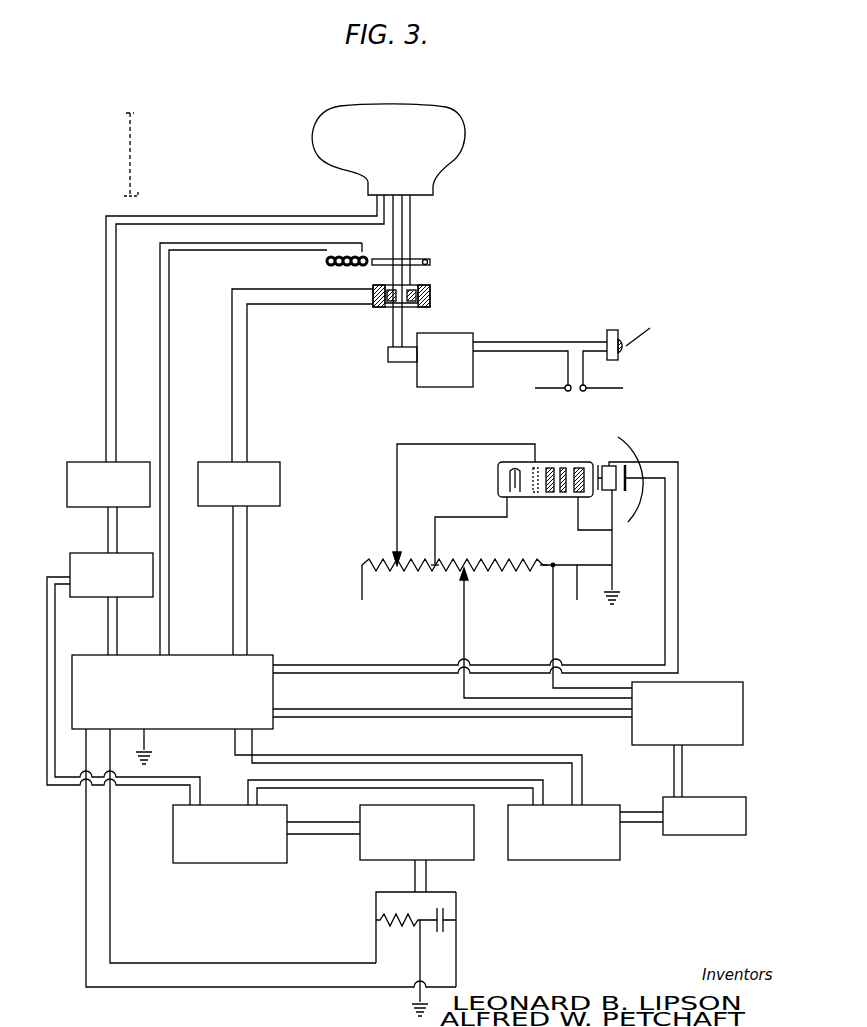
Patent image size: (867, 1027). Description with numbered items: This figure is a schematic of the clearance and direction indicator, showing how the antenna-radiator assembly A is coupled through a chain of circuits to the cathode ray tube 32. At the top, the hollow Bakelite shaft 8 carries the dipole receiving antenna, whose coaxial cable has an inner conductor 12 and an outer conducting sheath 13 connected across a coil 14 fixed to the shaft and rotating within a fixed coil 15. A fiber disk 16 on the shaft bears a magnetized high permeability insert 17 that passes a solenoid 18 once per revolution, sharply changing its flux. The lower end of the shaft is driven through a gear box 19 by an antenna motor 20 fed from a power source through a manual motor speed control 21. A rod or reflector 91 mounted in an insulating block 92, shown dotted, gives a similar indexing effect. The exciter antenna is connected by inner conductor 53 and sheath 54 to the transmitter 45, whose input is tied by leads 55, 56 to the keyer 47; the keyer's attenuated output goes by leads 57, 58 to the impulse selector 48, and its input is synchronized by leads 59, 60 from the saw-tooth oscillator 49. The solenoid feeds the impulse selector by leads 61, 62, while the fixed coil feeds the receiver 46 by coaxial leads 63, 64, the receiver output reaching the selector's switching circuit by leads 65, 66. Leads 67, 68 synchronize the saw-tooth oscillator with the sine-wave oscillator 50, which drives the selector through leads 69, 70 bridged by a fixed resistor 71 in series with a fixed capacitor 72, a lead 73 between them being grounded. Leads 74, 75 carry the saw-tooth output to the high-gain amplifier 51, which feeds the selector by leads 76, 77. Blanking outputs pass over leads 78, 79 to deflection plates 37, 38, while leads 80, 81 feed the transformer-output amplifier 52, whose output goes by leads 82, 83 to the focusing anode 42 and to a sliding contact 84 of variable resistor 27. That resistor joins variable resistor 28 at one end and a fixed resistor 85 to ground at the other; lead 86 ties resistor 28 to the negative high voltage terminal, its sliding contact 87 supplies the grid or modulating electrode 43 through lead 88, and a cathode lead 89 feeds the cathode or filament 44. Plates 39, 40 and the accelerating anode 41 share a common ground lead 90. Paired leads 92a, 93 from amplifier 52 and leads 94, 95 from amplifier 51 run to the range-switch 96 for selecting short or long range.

The antenna-radiator assembly A is at (430, 118).
The hollow Bakelite shaft 8 is at (403, 234).
The inner conductor 12 is at (412, 210).
The outer conducting sheath 13 is at (393, 230).
The coil 14 is at (416, 290).
The fixed coil 15 is at (430, 300).
The fiber disk 16 is at (428, 262).
The magnetized high permeability insert 17 is at (423, 250).
The solenoid 18 is at (328, 262).
The gear box 19 is at (392, 361).
The antenna motor 20 is at (473, 381).
The motor speed control 21 is at (617, 358).
The variable resistor 27 is at (459, 564).
The variable resistor 28 is at (487, 576).
The cathode ray tube 32 is at (630, 450).
The deflection plate 37 is at (606, 464).
The deflection plate 38 is at (636, 470).
The deflection plate 39 is at (622, 520).
The deflection plate 40 is at (593, 470).
The accelerating anode 41 is at (563, 497).
The focusing anode 42 is at (541, 468).
The grid or modulating electrode 43 is at (535, 497).
The cathode or filament 44 is at (509, 482).
The transmitter 45 is at (67, 495).
The receiver 46 is at (280, 492).
The keyer 47 is at (70, 563).
The impulse selector 48 is at (200, 655).
The saw-tooth oscillator 49 is at (248, 863).
The sine-wave oscillator 50 is at (468, 860).
The high-gain amplifier 51 is at (614, 860).
The transformer-output amplifier 52 is at (743, 732).
The inner conductor 53 is at (106, 268).
The concentric conducting sheath 54 is at (116, 290).
The lead 55 is at (108, 524).
The lead 56 is at (117, 544).
The lead 57 is at (108, 622).
The lead 58 is at (117, 645).
The lead 59 is at (47, 612).
The lead 60 is at (55, 643).
The lead 61 is at (160, 353).
The lead 62 is at (169, 388).
The coaxial lead 63 is at (232, 402).
The coaxial lead 64 is at (247, 430).
The lead 65 is at (233, 532).
The lead 66 is at (247, 568).
The lead 67 is at (316, 822).
The lead 68 is at (330, 834).
The lead 69 is at (376, 897).
The lead 70 is at (457, 950).
The fixed resistor 71 is at (404, 922).
The fixed capacitor 72 is at (445, 914).
The lead 73 is at (421, 968).
The lead 74 is at (395, 784).
The lead 75 is at (428, 790).
The lead 76 is at (465, 755).
The lead 77 is at (516, 763).
The lead 78 is at (666, 660).
The lead 79 is at (679, 642).
The lead 80 is at (372, 705).
The lead 81 is at (390, 718).
The lead 82 is at (591, 625).
The lead 83 is at (466, 657).
The sliding contact 84 is at (470, 576).
The fixed resistor 85 is at (521, 570).
The lead 86 is at (362, 584).
The sliding contact 87 is at (393, 552).
The lead 88 is at (394, 489).
The cathode lead 89 is at (470, 517).
The common lead 90 is at (596, 531).
The solid metal rod or reflector 91 is at (130, 150).
The insulating block 92 is at (126, 195).
The lead 92a is at (675, 770).
The lead 93 is at (682, 792).
The lead 94 is at (636, 811).
The lead 95 is at (648, 823).
The range-switch 96 is at (746, 814).